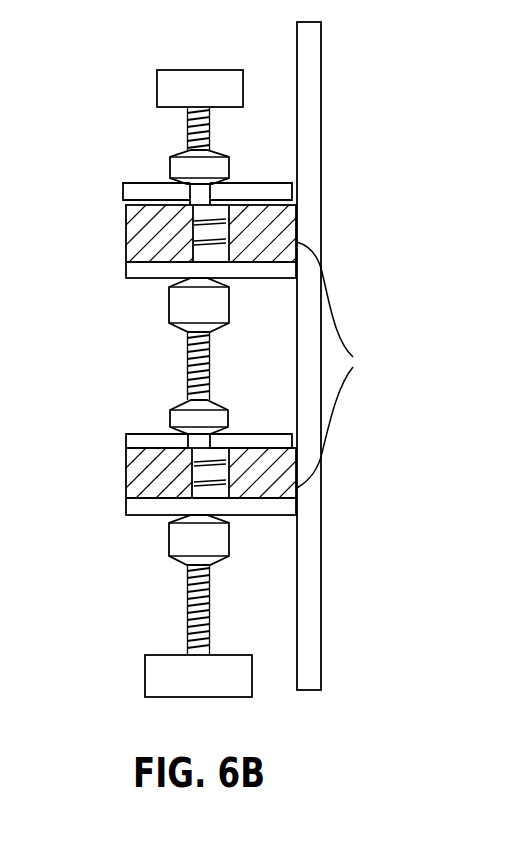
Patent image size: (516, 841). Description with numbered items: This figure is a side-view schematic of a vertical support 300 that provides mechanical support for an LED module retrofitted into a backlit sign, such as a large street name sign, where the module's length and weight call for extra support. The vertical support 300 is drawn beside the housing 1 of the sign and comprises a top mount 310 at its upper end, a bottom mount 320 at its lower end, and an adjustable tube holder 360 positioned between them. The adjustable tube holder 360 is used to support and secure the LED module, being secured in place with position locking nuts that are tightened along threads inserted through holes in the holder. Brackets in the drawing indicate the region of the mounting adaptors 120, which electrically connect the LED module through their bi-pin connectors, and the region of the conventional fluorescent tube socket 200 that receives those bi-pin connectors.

The housing 1 is at (321, 80).
The vertical support 300 is at (90, 168).
The top mount 310 is at (200, 68).
The bottom mount 320 is at (145, 677).
The adjustable tube holder 360 is at (142, 516).
The mounting adaptor 120 is at (161, 347).
The fluorescent tube socket 200 is at (346, 365).